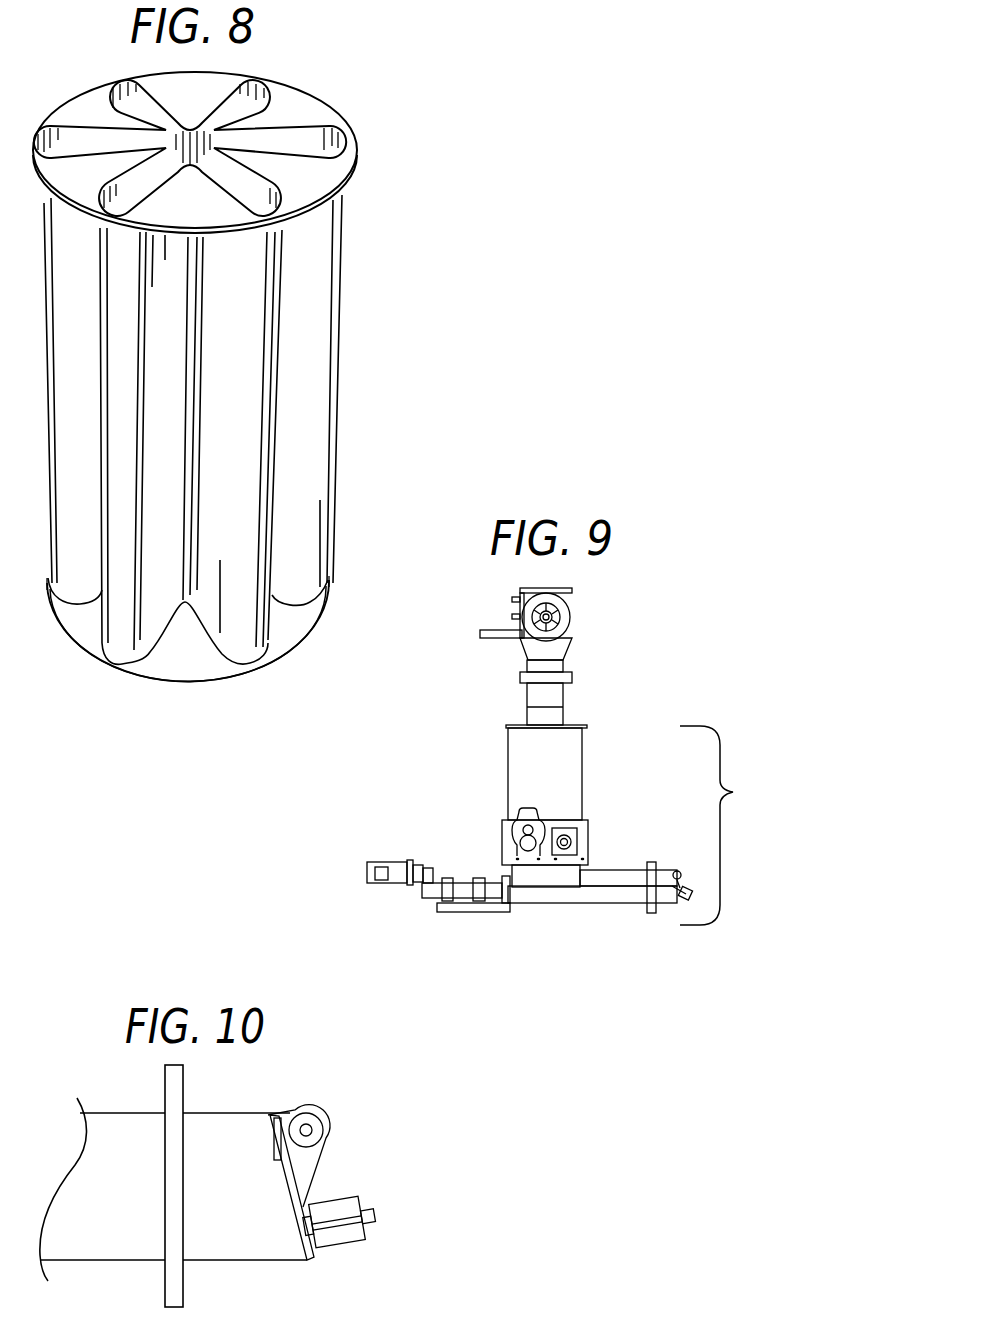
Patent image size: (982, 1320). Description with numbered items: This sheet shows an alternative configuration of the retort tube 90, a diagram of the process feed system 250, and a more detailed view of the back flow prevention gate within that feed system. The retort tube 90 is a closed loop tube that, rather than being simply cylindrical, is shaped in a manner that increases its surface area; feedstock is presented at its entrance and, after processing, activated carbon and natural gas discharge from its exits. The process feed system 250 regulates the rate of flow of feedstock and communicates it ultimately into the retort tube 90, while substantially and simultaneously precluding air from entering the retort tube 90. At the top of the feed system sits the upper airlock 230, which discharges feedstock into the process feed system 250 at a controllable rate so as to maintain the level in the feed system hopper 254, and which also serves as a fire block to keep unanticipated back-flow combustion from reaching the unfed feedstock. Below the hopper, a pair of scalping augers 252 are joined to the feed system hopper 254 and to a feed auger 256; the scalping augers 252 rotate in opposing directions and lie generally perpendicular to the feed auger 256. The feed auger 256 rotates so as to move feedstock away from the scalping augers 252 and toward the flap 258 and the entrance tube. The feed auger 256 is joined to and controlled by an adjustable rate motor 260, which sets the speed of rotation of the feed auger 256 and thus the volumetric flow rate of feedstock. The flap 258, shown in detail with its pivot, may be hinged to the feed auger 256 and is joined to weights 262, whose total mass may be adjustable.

In FIG. 8, the retort tube 90 is at (333, 423).
In FIG. 9, the upper airlock 230 is at (590, 602).
In FIG. 9, the process feed system 250 is at (733, 792).
In FIG. 9, the scalping augers 252 is at (500, 828).
In FIG. 9, the feed system hopper 254 is at (502, 760).
In FIG. 9, the feed auger 256 is at (533, 912).
In FIG. 9, the flap 258 is at (690, 877).
In FIG. 10, the flap 258 is at (330, 1147).
In FIG. 9, the adjustable rate motor 260 is at (362, 873).
In FIG. 9, the weights 262 is at (697, 893).
In FIG. 10, the weights 262 is at (380, 1217).